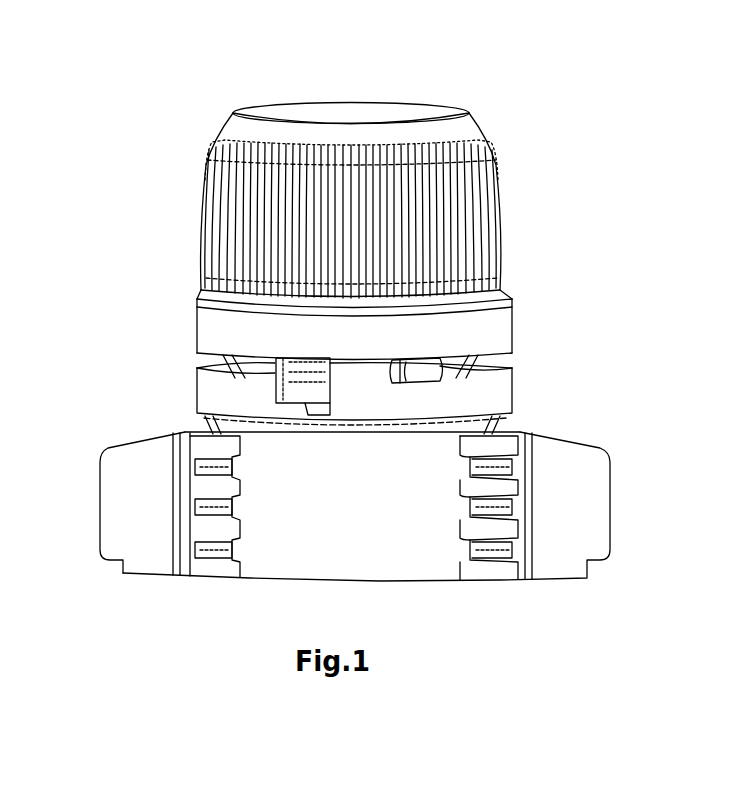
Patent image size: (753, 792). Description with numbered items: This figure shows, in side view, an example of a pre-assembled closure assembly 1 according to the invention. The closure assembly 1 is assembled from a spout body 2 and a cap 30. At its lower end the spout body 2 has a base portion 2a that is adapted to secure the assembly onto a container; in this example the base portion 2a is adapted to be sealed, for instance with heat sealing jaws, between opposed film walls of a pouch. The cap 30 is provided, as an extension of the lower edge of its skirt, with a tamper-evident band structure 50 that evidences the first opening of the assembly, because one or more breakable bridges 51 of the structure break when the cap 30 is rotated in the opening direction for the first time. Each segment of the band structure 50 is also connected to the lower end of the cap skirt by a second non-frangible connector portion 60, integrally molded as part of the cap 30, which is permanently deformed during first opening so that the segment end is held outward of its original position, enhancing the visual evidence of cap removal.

The closure assembly 1 is at (126, 162).
The spout body 2 is at (152, 594).
The base portion 2a is at (621, 442).
The cap 30 is at (538, 113).
The tamper-evident band structure 50 is at (528, 392).
The breakable bridges 51 is at (331, 428).
The second non-frangible connector portion 60 is at (505, 360).